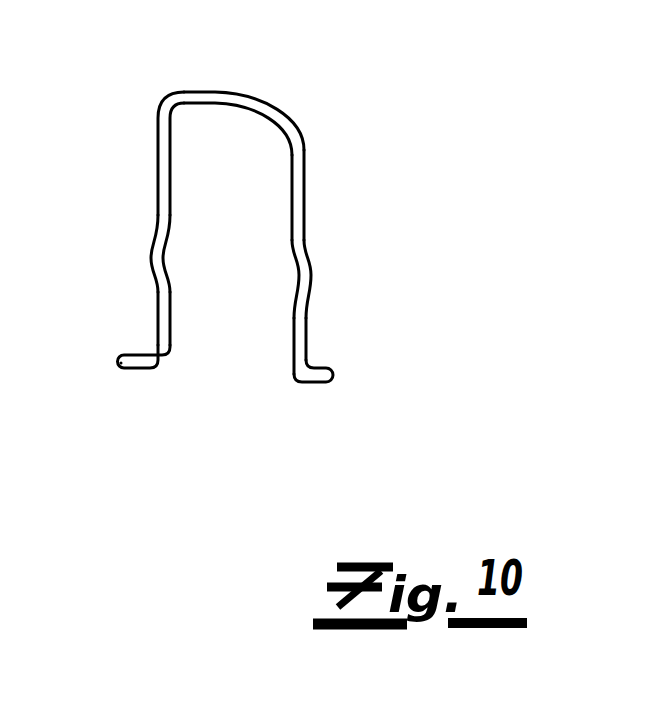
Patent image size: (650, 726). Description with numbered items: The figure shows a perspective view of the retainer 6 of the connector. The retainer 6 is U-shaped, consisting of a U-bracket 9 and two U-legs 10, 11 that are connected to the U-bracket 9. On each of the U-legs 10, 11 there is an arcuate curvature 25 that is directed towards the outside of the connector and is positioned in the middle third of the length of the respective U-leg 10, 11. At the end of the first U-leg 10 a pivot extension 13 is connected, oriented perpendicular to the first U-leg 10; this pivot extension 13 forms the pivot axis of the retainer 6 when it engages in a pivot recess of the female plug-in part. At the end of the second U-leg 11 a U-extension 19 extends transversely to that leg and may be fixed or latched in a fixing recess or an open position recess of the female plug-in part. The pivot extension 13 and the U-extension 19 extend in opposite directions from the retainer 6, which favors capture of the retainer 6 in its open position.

The retainer 6 is at (182, 422).
The U-bracket 9 is at (243, 102).
The first U-leg 10 is at (150, 158).
The second U-leg 11 is at (314, 187).
The pivot extension 13 is at (140, 355).
The U-extension 19 is at (328, 382).
The arcuate curvature 25 is at (158, 238).